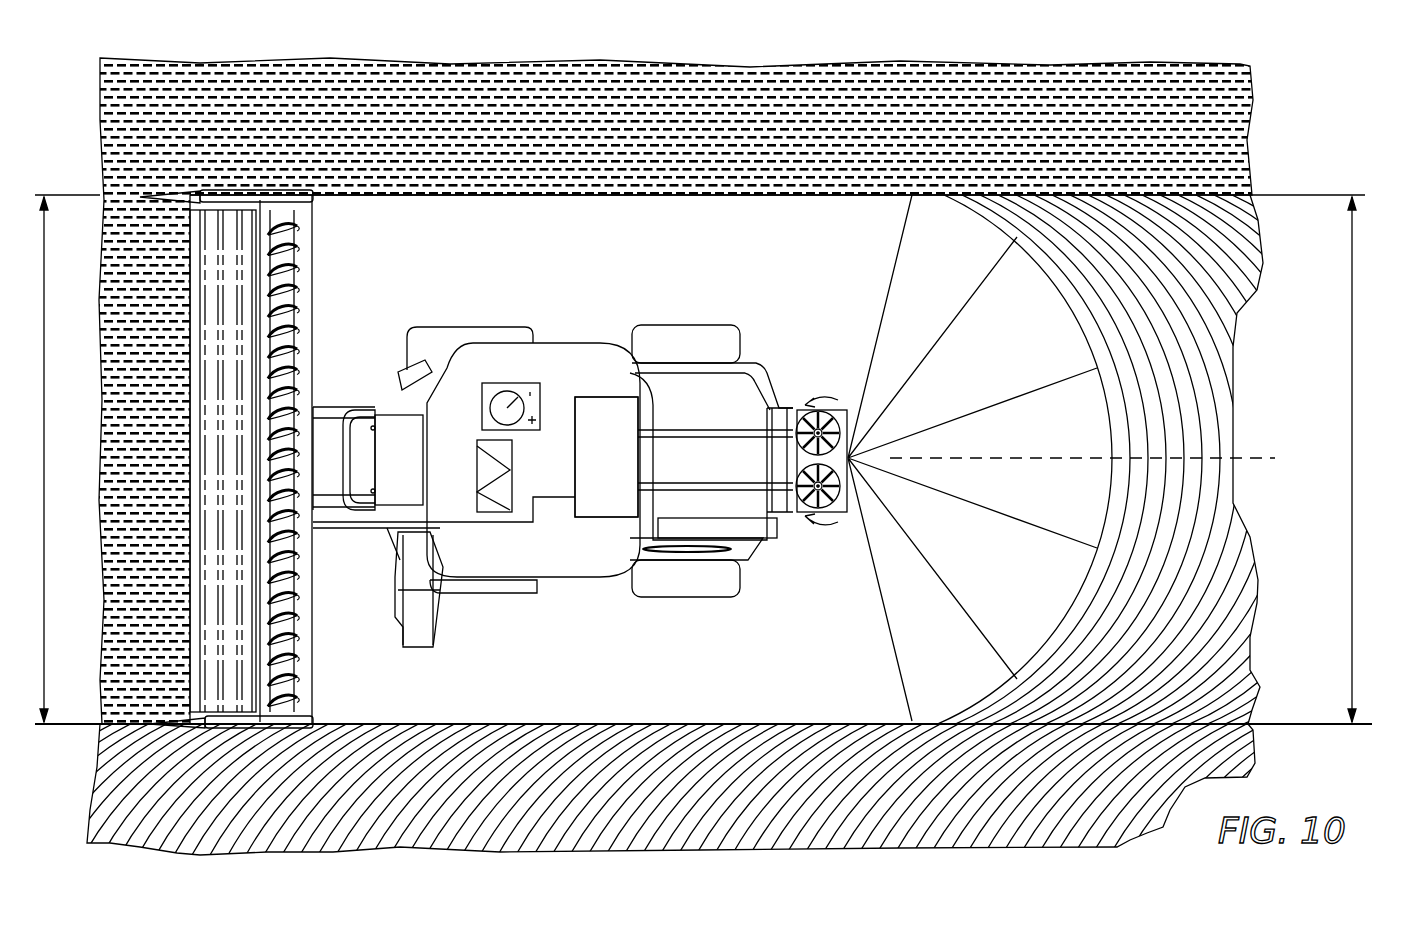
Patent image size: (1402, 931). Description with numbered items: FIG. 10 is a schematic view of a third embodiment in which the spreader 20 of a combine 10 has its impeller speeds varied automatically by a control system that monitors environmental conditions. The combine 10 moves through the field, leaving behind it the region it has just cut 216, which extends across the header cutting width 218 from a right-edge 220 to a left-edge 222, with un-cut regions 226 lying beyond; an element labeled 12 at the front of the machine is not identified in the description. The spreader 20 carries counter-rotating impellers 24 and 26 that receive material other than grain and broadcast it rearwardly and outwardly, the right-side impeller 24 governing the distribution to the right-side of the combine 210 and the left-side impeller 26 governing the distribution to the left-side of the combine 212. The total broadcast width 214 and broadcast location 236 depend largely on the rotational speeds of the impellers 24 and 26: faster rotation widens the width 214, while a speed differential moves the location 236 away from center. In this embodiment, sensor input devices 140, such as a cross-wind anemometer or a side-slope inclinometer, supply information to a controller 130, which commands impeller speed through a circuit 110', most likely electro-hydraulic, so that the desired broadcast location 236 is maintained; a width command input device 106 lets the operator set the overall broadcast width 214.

The combine 10 is at (558, 562).
The cutter head 12 is at (313, 655).
The spreader 20 is at (850, 462).
The right-side impeller 24 is at (814, 410).
The left-side impeller 26 is at (820, 514).
The width command input device 106 is at (500, 392).
The circuit 110' is at (711, 438).
The controller 130 is at (632, 462).
The sensor input devices 140 is at (476, 468).
The right-side of the combine 210 is at (1230, 228).
The left-side of the combine 212 is at (1220, 687).
The broadcast width 214 is at (1356, 459).
The cut region 216 is at (618, 668).
The header cutting width 218 is at (49, 459).
The right-edge 220 is at (78, 195).
The left-edge 222 is at (78, 727).
The un-cut regions 226 is at (553, 92).
The broadcast location 236 is at (1250, 457).